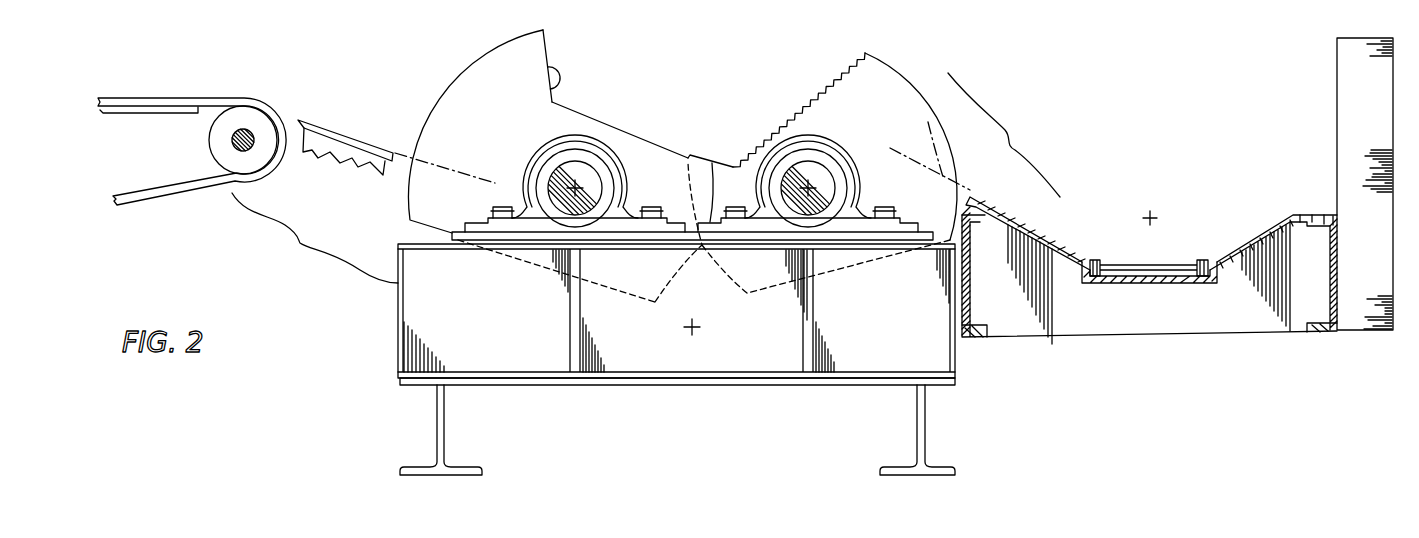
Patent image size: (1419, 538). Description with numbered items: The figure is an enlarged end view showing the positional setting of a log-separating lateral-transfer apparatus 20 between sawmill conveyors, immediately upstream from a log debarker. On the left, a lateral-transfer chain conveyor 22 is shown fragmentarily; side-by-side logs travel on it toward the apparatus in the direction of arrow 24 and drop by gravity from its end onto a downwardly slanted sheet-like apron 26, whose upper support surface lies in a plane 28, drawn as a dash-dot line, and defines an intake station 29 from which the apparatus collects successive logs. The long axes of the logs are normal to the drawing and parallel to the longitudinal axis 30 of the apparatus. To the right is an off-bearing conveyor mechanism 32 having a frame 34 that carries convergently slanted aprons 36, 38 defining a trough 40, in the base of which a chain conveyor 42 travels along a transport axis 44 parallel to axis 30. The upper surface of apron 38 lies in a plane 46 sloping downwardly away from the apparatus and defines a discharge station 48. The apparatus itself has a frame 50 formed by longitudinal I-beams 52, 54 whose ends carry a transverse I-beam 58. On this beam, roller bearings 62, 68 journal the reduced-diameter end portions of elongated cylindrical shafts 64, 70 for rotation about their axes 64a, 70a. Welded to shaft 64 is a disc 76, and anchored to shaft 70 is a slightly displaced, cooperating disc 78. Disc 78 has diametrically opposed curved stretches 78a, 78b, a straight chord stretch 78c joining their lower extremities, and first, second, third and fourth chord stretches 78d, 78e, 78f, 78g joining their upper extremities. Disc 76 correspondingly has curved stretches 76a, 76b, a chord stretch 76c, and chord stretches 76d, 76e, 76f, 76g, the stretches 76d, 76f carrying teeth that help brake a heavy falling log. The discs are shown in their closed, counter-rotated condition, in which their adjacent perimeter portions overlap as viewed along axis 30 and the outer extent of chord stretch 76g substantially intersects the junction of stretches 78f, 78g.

The log-separating lateral-transfer apparatus 20 is at (366, 74).
The lateral-transfer chain conveyor 22 is at (170, 209).
The arrow 24 is at (205, 62).
The sheet-like apron 26 is at (328, 142).
The plane 28 is at (427, 158).
The intake station 29 is at (416, 62).
The longitudinal axis 30 is at (695, 331).
The off-bearing conveyor mechanism 32 is at (1218, 106).
The frame 34 is at (1337, 88).
The apron 36 is at (1278, 223).
The apron 38 is at (1048, 240).
The trough 40 is at (1218, 182).
The chain conveyor 42 is at (1143, 264).
The transport axis 44 is at (1153, 213).
The plane 46 is at (930, 149).
The discharge station 48 is at (1067, 168).
The frame 50 is at (978, 379).
The longitudinal I-beam 52 is at (437, 432).
The longitudinal I-beam 54 is at (925, 428).
The transverse I-beam 58 is at (398, 320).
The roller bearing 62 is at (812, 153).
The shaft 64 is at (817, 172).
The longitudinal axis of shaft 64 64a is at (812, 188).
The roller bearing 68 is at (545, 170).
The shaft 70 is at (575, 168).
The longitudinal axis of shaft 70 70a is at (579, 188).
The disc 76 is at (841, 165).
The curved stretch of disc 76 76a is at (910, 78).
The curved stretch of disc 76 76b is at (732, 283).
The chord stretch of disc 76 76c is at (879, 264).
The chord stretch of disc 76 76d is at (828, 77).
The chord stretch of disc 76 76e is at (767, 140).
The chord stretch of disc 76 76f is at (729, 163).
The chord stretch of disc 76 76g is at (725, 160).
The disc 78 is at (540, 181).
The curved stretch of disc 78 78a is at (419, 134).
The curved stretch of disc 78 78b is at (659, 260).
The chord stretch of disc 78 78c is at (537, 266).
The first chord stretch of disc 78 78d is at (546, 69).
The second chord stretch of disc 78 78e is at (600, 118).
The third chord stretch of disc 78 78f is at (680, 153).
The fourth chord stretch of disc 78 78g is at (689, 152).